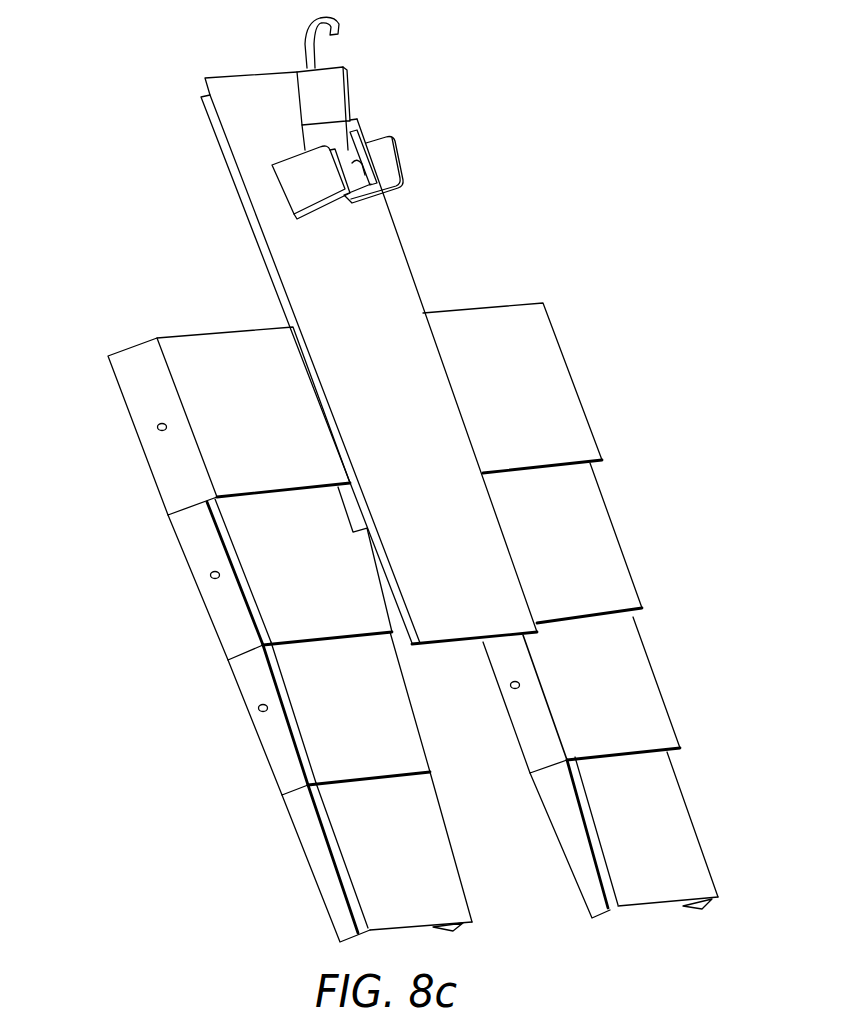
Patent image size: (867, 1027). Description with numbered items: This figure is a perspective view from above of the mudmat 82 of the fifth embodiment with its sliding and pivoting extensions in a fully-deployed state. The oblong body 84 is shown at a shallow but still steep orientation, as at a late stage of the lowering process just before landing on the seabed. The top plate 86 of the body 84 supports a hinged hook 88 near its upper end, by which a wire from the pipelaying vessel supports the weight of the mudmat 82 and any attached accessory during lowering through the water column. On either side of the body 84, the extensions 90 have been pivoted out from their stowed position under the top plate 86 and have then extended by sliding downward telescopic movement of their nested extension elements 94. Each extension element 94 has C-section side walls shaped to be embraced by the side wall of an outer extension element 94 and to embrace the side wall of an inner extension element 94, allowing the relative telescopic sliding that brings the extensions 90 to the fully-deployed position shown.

The mudmat 82 is at (84, 121).
The oblong body 84 is at (232, 236).
The top plate 86 is at (393, 270).
The hinged hook 88 is at (335, 88).
The extension 90 is at (163, 485).
The extension element 94 is at (223, 630).